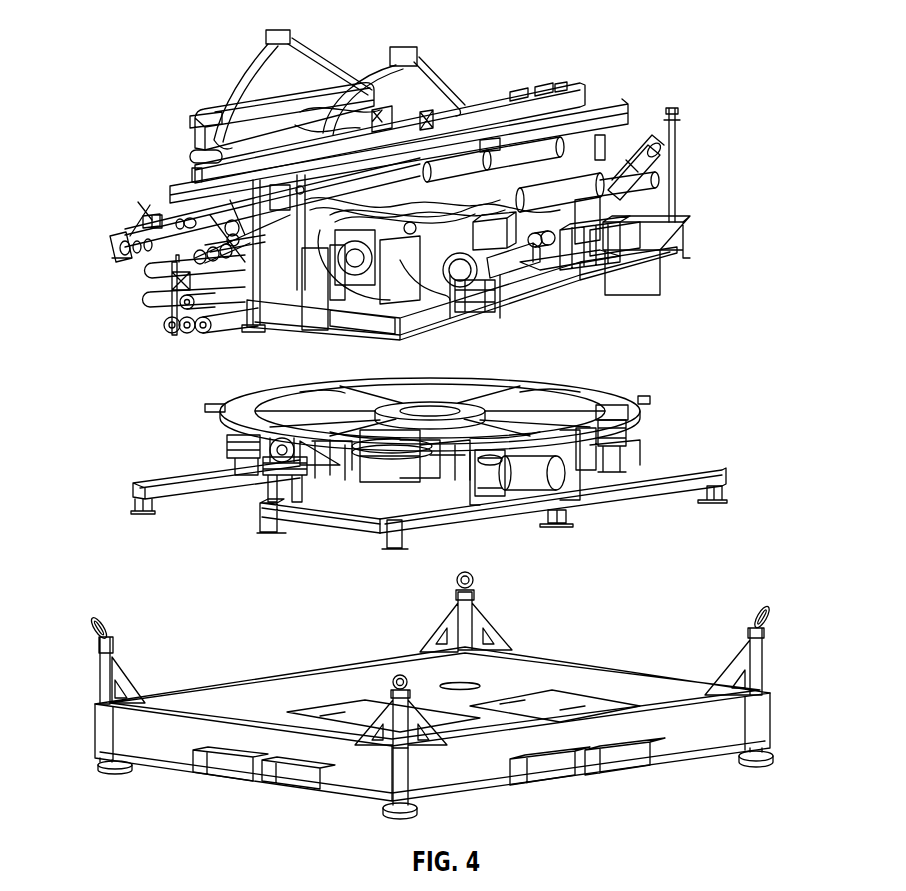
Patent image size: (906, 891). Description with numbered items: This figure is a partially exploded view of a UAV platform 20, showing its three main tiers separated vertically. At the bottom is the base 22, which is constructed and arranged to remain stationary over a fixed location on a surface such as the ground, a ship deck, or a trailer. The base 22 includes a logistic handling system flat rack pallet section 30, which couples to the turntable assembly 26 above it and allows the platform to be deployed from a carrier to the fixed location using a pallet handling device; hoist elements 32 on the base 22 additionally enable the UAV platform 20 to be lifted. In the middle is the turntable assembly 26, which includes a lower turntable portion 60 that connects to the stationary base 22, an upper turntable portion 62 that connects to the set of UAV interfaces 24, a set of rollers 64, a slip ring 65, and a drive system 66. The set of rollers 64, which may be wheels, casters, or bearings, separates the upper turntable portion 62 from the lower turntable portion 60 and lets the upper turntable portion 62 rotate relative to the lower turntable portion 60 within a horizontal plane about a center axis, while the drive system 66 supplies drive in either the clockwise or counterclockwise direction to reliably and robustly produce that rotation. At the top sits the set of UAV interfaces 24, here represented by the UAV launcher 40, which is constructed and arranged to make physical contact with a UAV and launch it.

The UAV platform 20 is at (56, 28).
The base 22 is at (92, 565).
The set of UAV interfaces 24 is at (106, 30).
The turntable assembly 26 is at (108, 372).
The logistic handling system flat rack pallet section 30 is at (618, 774).
The hoist elements 32 is at (773, 599).
The UAV launcher 40 is at (223, 96).
The lower turntable portion 60 is at (610, 495).
The upper turntable portion 62 is at (614, 394).
The set of rollers 64 is at (618, 436).
The slip ring 65 is at (436, 402).
The drive system 66 is at (543, 487).